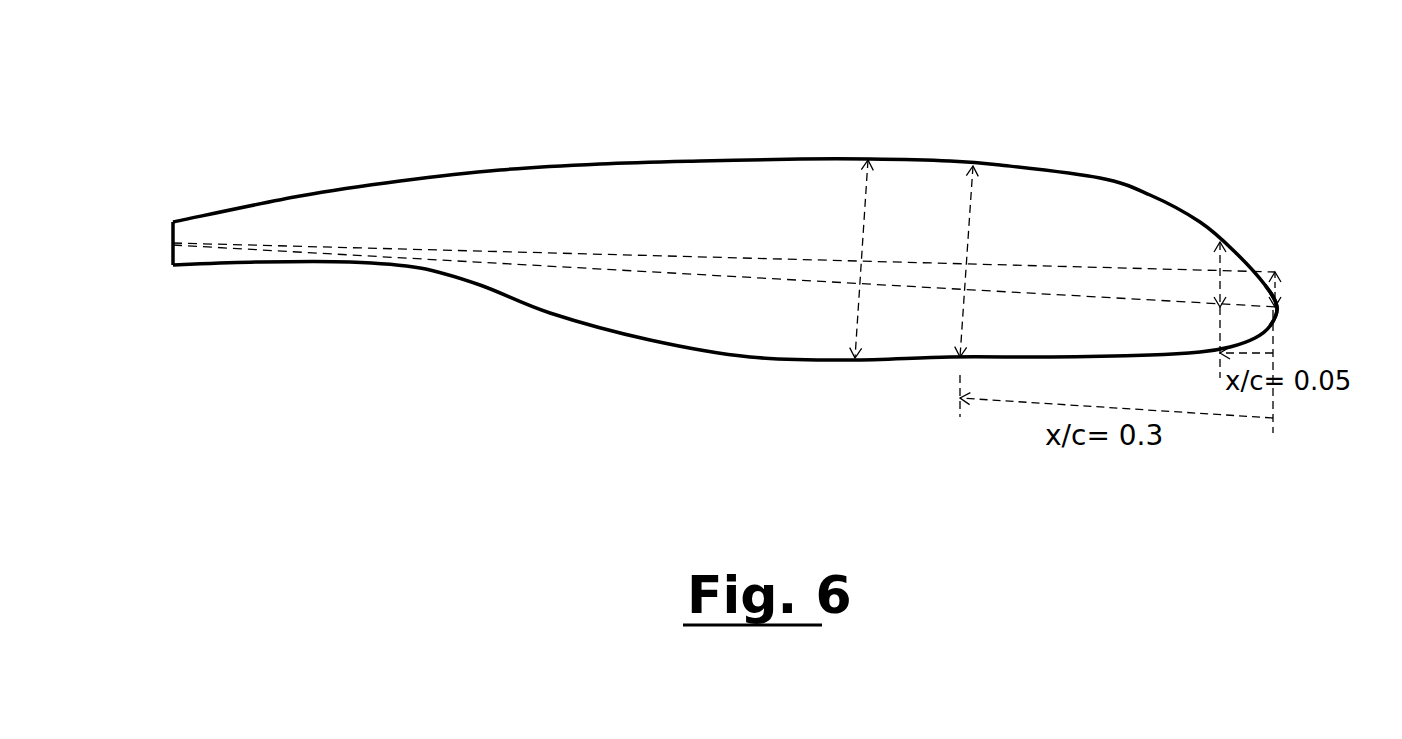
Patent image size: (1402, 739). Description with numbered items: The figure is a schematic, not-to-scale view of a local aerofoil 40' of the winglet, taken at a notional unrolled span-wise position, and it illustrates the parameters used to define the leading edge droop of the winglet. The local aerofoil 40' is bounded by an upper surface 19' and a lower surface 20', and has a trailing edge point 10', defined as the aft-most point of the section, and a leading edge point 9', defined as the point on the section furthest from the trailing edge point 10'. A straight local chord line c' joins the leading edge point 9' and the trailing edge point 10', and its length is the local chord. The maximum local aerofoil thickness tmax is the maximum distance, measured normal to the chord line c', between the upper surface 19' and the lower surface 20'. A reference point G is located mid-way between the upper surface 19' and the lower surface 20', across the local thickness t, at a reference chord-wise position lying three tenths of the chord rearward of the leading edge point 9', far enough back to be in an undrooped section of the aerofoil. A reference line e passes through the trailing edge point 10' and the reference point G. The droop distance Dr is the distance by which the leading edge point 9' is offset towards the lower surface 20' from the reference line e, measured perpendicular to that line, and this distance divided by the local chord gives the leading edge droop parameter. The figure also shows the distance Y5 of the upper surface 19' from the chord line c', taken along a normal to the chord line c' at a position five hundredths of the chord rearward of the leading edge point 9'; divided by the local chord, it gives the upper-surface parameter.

The local aerofoil 40' is at (721, 227).
The upper surface 19' is at (725, 191).
The lower surface 20' is at (725, 354).
The trailing edge point 10' is at (141, 271).
The leading edge point 9' is at (1298, 326).
The reference point G is at (967, 265).
The reference line e is at (724, 246).
The local chord line c' is at (725, 281).
The maximum local aerofoil thickness tmax is at (828, 259).
The local aerofoil thickness t is at (956, 261).
The upper surface distance at x/c=0.05 Y5 is at (1194, 269).
The leading edge droop distance Dr is at (1304, 296).